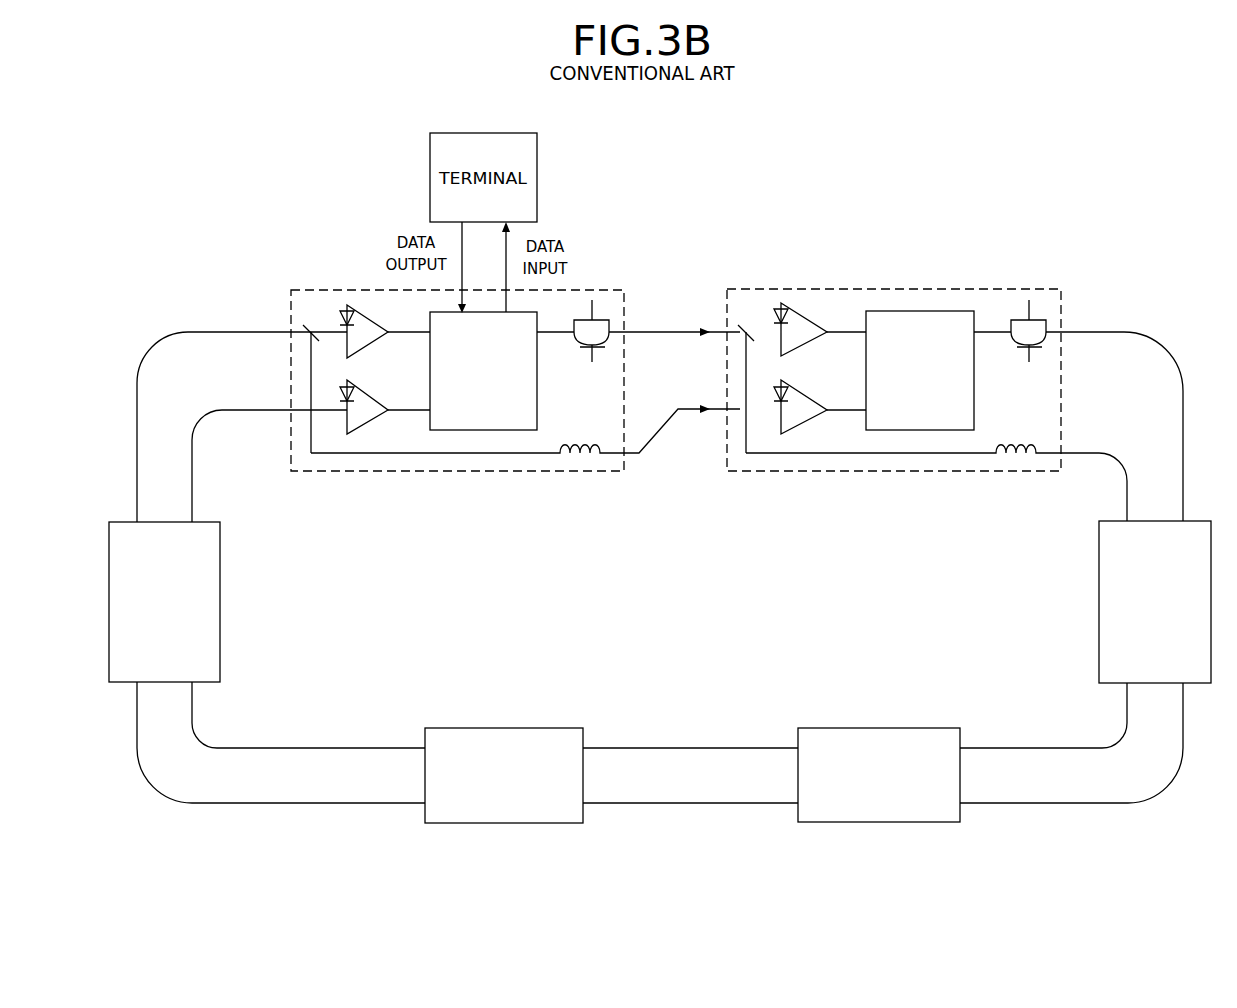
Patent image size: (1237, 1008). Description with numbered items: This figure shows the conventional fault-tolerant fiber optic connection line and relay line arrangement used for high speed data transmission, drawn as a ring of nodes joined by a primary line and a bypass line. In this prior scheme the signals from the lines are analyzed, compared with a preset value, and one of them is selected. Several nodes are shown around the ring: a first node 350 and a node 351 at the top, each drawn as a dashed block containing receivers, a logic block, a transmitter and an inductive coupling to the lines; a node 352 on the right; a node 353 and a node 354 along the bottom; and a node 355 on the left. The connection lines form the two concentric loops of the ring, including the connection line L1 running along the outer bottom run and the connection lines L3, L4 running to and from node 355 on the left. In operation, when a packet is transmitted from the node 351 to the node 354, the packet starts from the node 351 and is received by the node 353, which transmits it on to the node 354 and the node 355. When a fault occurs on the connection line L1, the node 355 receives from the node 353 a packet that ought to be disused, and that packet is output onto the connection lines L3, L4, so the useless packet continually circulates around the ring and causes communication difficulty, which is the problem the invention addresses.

The first control unit 350 is at (466, 478).
The node 351 is at (895, 478).
The right terminal block 352 is at (1085, 613).
The node 353 is at (881, 720).
The node 354 is at (507, 720).
The node 355 is at (234, 612).
The connection line L1 is at (325, 806).
The connection line L3 is at (137, 462).
The connection line L4 is at (192, 463).